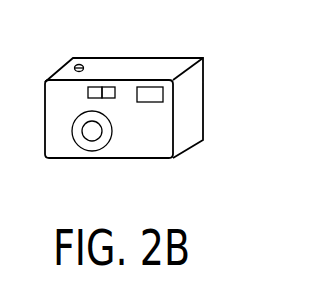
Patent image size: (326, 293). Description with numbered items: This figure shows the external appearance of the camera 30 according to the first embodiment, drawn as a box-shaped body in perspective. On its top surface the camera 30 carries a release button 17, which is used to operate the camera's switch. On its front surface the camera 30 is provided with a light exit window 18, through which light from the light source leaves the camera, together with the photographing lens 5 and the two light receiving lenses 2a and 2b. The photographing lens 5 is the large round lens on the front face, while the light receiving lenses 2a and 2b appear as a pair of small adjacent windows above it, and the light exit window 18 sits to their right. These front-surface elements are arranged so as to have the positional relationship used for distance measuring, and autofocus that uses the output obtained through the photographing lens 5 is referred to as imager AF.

The light receiving lens 2a is at (96, 87).
The light receiving lens 2b is at (109, 87).
The photographing lens 5 is at (92, 132).
The release button 17 is at (77, 65).
The light exit window 18 is at (160, 93).
The camera 30 is at (203, 140).